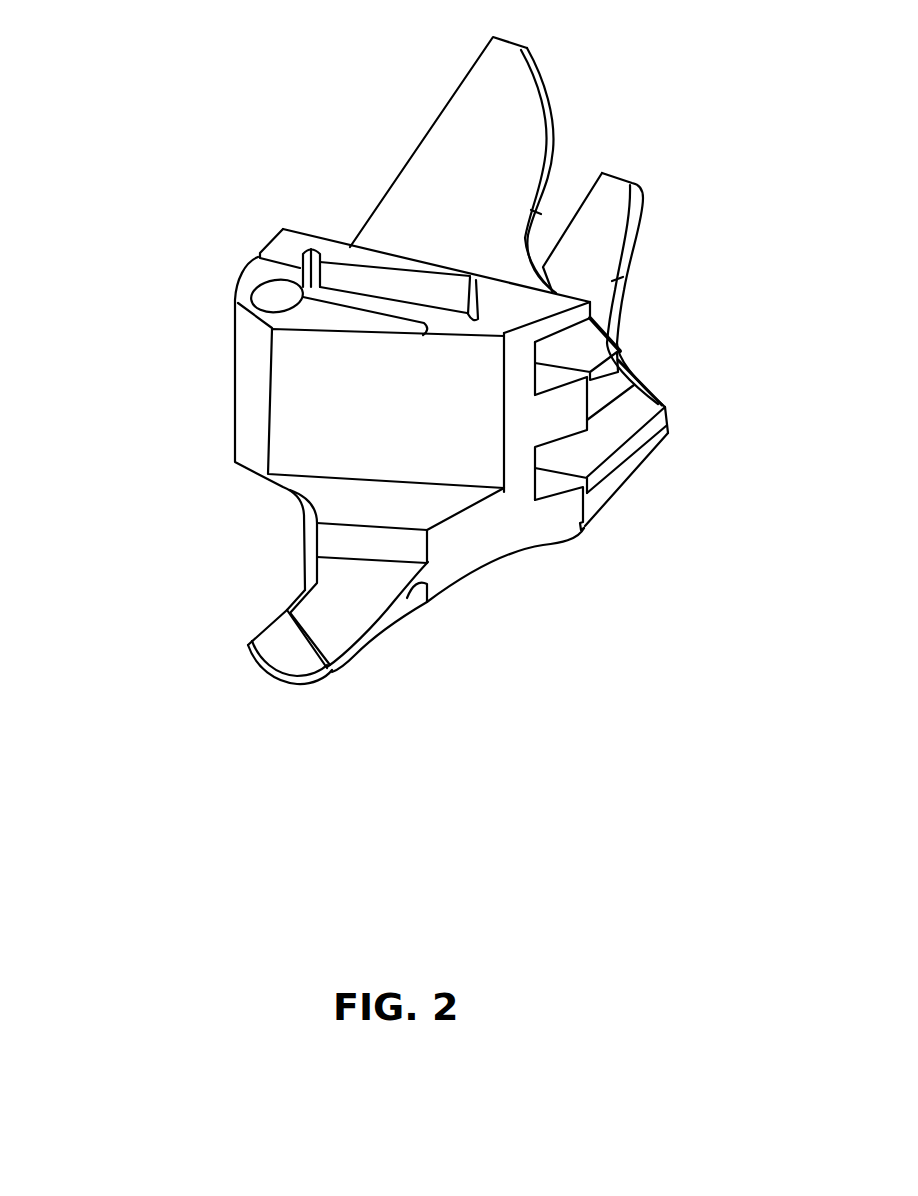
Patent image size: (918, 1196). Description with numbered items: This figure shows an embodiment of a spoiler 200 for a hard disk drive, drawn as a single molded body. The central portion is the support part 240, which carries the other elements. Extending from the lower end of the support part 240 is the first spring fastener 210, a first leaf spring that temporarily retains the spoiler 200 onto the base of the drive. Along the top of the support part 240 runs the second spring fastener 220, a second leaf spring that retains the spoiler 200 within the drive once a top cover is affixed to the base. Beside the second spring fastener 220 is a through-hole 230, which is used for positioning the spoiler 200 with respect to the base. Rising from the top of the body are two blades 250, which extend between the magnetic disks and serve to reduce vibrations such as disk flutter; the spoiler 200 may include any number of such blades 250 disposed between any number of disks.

The spoiler 200 is at (121, 55).
The first spring fastener 210 is at (337, 606).
The second spring fastener 220 is at (360, 284).
The through-hole 230 is at (274, 294).
The support part 240 is at (333, 397).
The blades 250 is at (502, 108).